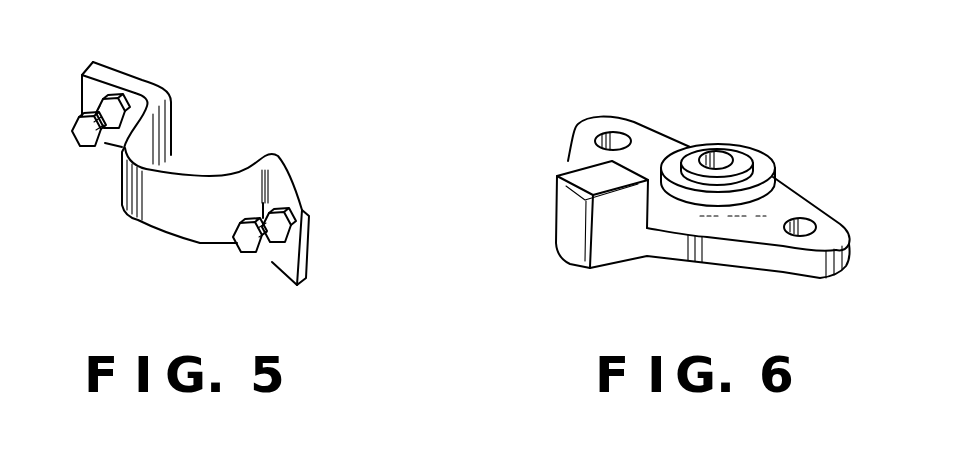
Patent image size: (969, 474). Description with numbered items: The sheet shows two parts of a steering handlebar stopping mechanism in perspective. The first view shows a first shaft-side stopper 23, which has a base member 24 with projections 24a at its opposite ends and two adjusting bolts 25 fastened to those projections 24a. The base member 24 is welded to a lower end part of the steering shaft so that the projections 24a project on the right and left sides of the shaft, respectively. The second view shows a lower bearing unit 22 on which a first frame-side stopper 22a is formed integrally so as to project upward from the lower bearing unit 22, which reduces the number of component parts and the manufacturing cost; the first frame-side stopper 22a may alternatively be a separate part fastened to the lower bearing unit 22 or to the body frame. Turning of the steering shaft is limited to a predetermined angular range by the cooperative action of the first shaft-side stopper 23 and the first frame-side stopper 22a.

In FIG. 6, the lower bearing unit 22 is at (780, 205).
In FIG. 6, the first frame-side stopper 22a is at (573, 173).
In FIG. 5, the first shaft-side stopper 23 is at (255, 120).
In FIG. 5, the base member 24 is at (145, 207).
In FIG. 5, the projections 24a is at (127, 72).
In FIG. 5, the adjusting bolts 25 is at (83, 140).